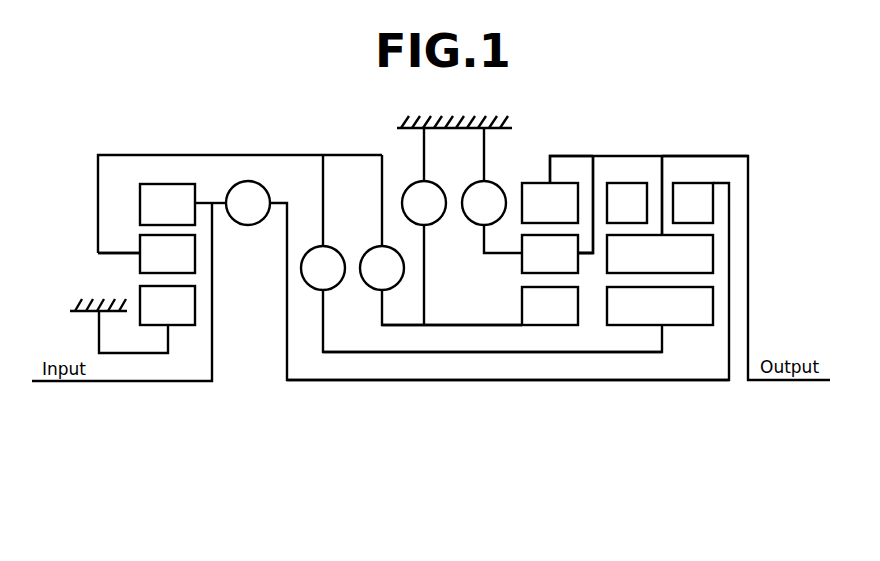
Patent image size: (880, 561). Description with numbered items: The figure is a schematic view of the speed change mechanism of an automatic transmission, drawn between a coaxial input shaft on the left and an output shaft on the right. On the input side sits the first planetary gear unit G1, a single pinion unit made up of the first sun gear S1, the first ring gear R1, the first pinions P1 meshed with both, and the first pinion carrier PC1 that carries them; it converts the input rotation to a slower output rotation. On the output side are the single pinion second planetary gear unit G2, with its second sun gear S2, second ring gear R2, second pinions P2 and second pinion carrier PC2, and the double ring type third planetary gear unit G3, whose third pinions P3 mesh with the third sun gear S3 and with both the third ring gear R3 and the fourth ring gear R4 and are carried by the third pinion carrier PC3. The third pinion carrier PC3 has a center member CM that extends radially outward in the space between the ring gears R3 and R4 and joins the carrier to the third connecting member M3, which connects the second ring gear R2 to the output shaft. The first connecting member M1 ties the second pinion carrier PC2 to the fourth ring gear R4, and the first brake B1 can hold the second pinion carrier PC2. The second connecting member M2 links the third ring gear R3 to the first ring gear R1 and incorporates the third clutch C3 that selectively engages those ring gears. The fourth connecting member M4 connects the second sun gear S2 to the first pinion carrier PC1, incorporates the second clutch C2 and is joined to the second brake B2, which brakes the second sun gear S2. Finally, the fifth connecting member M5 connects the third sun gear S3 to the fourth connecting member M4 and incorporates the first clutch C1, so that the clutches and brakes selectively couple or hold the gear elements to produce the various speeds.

The first planetary gear unit G1 is at (179, 212).
The first ring gear R1 is at (167, 204).
The first pinions P1 is at (167, 254).
The first sun gear S1 is at (167, 305).
The first pinion carrier PC1 is at (139, 255).
The third clutch C3 is at (248, 203).
The first clutch C1 is at (323, 268).
The second clutch C2 is at (382, 268).
The first brake B1 is at (484, 203).
The second brake B2 is at (424, 203).
The first connecting member M1 is at (588, 212).
The second connecting member M2 is at (620, 382).
The third connecting member M3 is at (568, 152).
The fourth connecting member M4 is at (403, 323).
The fifth connecting member M5 is at (360, 350).
The second planetary gear unit G2 is at (535, 307).
The second ring gear R2 is at (550, 203).
The second pinions P2 is at (550, 254).
The second sun gear S2 is at (550, 306).
The second pinion carrier PC2 is at (586, 255).
The third planetary gear unit G3 is at (660, 309).
The third ring gear R3 is at (693, 203).
The fourth ring gear R4 is at (627, 203).
The third pinions P3 is at (660, 254).
The third sun gear S3 is at (676, 332).
The third pinion carrier PC3 is at (657, 223).
The center member CM is at (662, 172).